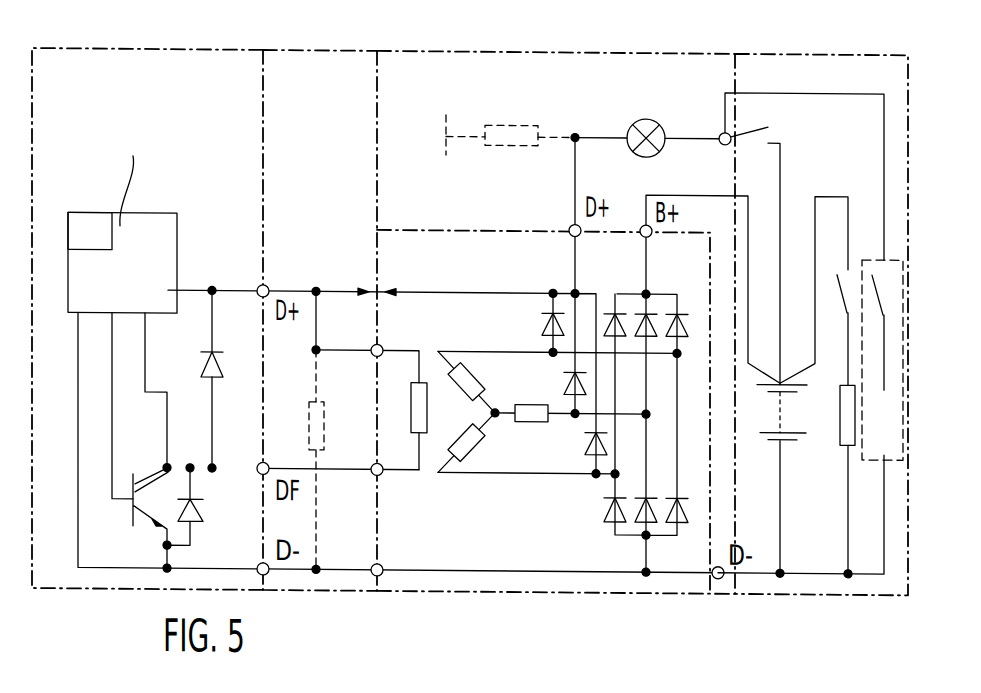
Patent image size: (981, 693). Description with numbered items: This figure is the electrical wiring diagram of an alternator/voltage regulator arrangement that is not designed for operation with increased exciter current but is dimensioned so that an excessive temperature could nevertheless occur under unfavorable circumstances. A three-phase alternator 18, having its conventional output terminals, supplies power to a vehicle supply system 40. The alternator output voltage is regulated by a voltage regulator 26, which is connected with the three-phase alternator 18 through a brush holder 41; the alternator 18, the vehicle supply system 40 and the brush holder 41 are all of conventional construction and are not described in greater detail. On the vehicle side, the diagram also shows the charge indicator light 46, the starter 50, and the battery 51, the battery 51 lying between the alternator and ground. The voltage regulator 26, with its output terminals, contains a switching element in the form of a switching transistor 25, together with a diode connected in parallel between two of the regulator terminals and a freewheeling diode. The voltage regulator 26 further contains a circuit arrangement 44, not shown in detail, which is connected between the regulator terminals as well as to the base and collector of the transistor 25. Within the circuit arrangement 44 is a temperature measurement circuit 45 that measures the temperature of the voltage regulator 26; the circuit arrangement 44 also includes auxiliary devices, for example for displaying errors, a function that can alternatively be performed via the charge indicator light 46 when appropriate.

The three-phase alternator 18 is at (475, 541).
The switching transistor 25 is at (132, 502).
The voltage regulator 26 is at (155, 72).
The vehicle supply system 40 is at (852, 580).
The brush holder 41 is at (297, 70).
The circuit arrangement 44 is at (143, 248).
The temperature measurement circuit 45 is at (83, 240).
The charge indicator light 46 is at (612, 62).
The starter 50 is at (752, 122).
The battery 51 is at (805, 420).